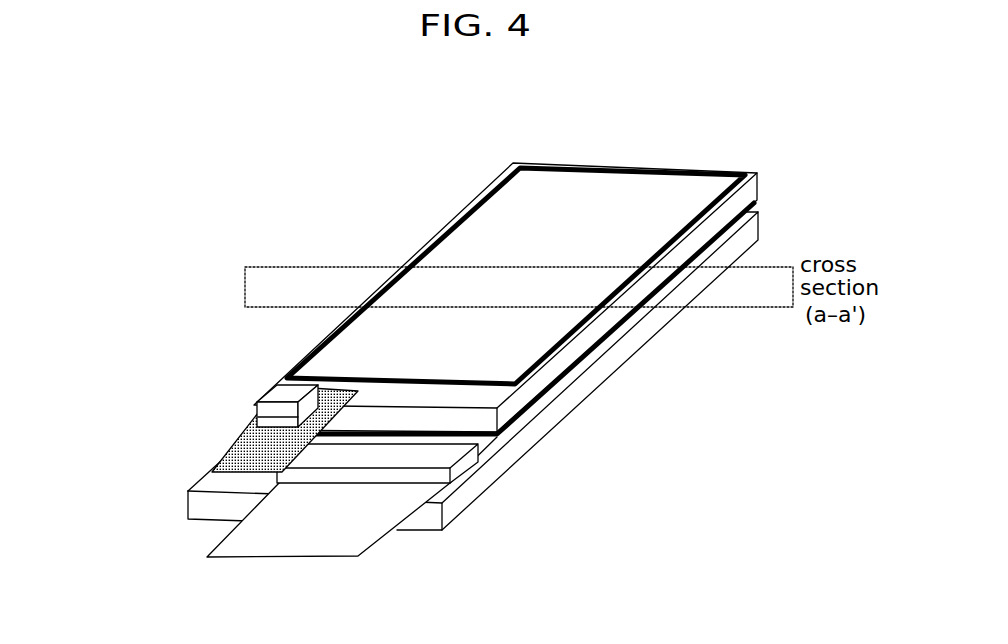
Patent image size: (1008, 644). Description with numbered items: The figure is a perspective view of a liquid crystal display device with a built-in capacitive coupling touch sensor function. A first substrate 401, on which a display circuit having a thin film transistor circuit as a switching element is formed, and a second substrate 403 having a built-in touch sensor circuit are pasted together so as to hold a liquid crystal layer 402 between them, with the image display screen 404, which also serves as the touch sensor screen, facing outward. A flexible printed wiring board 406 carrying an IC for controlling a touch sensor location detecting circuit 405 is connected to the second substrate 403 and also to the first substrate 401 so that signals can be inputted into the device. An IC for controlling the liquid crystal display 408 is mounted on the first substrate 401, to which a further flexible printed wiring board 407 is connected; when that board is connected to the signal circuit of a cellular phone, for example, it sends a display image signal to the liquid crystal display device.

The first substrate 401 is at (545, 420).
The liquid crystal layer 402 is at (600, 340).
The second substrate 403 is at (745, 193).
The image display screen 404 is at (517, 210).
The IC for controlling a touch sensor location detecting circuit 405 is at (297, 412).
The flexible printed wiring board 406 is at (262, 457).
The flexible printed wiring board 407 is at (360, 555).
The IC for controlling the liquid crystal display 408 is at (442, 463).